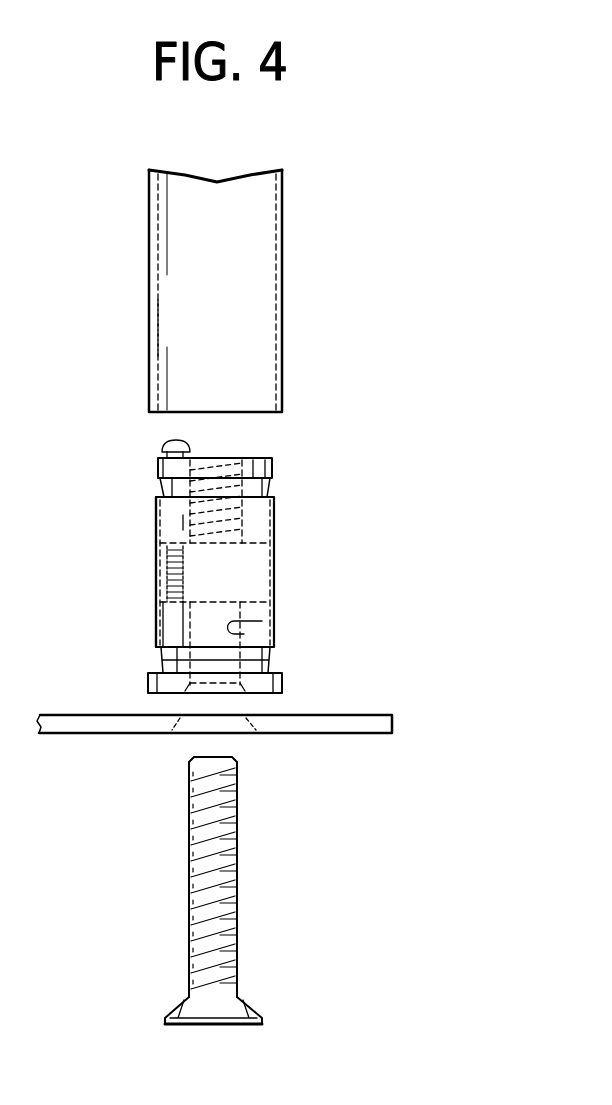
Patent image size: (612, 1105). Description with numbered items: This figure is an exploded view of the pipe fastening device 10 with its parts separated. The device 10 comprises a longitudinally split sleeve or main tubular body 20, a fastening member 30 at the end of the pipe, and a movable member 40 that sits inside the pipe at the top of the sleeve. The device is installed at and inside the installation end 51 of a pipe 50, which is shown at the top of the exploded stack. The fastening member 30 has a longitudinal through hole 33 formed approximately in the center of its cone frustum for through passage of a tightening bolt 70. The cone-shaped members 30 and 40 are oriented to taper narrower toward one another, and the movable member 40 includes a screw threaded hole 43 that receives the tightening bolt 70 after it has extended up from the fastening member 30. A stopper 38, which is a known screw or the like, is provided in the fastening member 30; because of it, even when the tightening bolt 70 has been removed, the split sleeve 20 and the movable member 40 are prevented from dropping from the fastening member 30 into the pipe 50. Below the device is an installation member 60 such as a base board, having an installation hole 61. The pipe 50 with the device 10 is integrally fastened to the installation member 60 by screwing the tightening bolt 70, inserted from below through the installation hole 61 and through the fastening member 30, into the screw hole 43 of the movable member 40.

The pipe fastening device 10 is at (157, 578).
The main tubular body 20 is at (274, 574).
The fastening member 30 is at (282, 688).
The longitudinal through hole 33 is at (240, 627).
The stopper 38 is at (163, 447).
The movable member 40 is at (272, 478).
The screw threaded hole 43 is at (237, 468).
The pipe 50 is at (283, 249).
The installation end 51 is at (149, 348).
The installation member 60 is at (392, 724).
The installation hole 61 is at (256, 731).
The tightening bolt 70 is at (262, 1010).